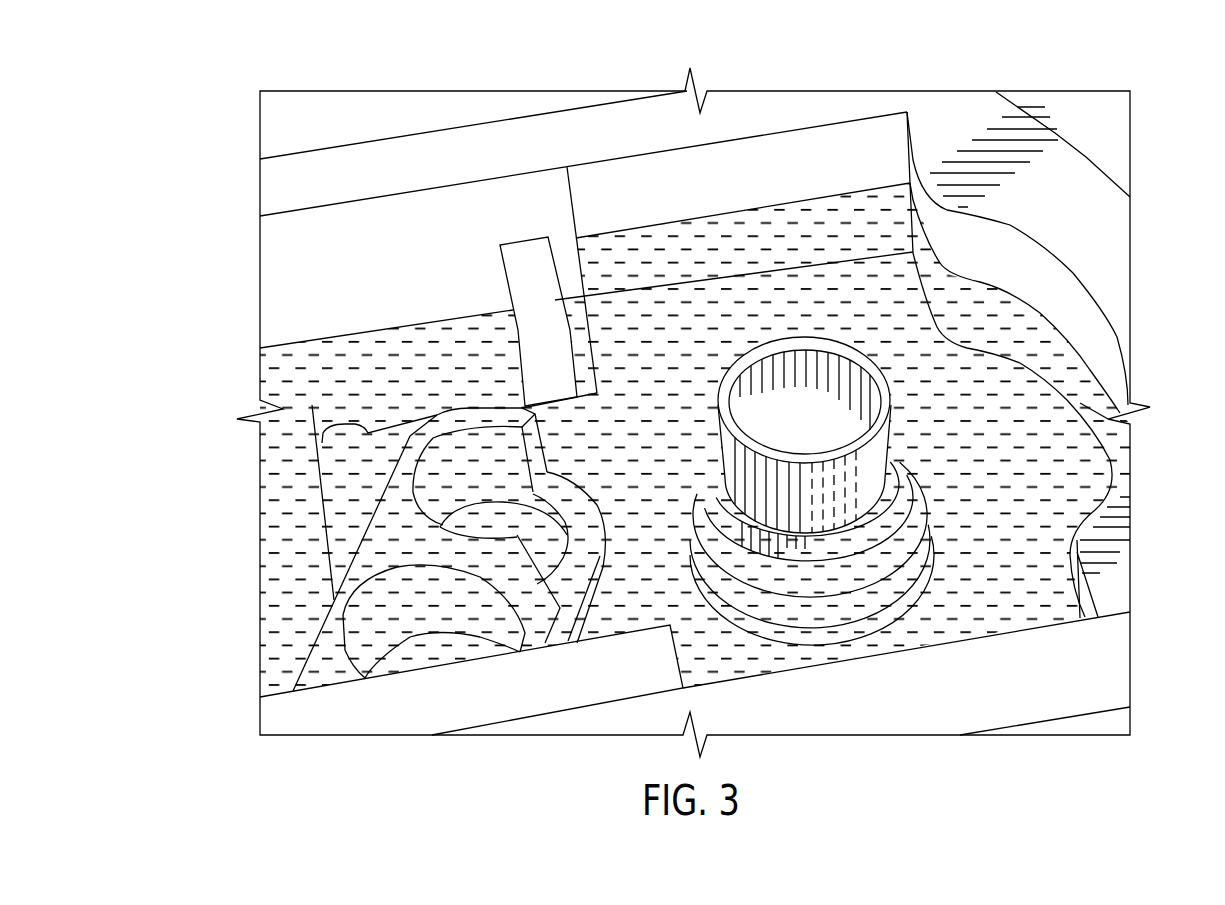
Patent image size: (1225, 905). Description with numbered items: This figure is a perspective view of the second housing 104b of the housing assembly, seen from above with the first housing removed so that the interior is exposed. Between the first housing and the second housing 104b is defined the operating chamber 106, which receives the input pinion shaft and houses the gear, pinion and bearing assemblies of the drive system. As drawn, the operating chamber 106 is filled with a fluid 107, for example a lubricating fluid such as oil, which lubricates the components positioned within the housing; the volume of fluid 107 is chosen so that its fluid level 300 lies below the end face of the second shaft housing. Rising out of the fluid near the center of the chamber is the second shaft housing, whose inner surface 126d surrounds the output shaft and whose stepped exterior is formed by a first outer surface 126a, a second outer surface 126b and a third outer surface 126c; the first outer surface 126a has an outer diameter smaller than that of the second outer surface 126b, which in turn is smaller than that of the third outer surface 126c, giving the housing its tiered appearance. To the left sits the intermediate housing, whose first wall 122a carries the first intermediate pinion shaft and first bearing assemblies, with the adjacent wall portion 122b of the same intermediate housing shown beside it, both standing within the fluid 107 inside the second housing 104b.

The second housing 104b is at (1065, 163).
The operating chamber 106 is at (830, 222).
The fluid 107 is at (990, 612).
The first wall 122a is at (345, 616).
The second boss 122b is at (533, 454).
The first outer surface 126a is at (888, 428).
The second outer surface 126b is at (715, 490).
The third outer surface 126c is at (918, 505).
The inner surface 126d is at (730, 408).
The fluid level 300 is at (757, 207).